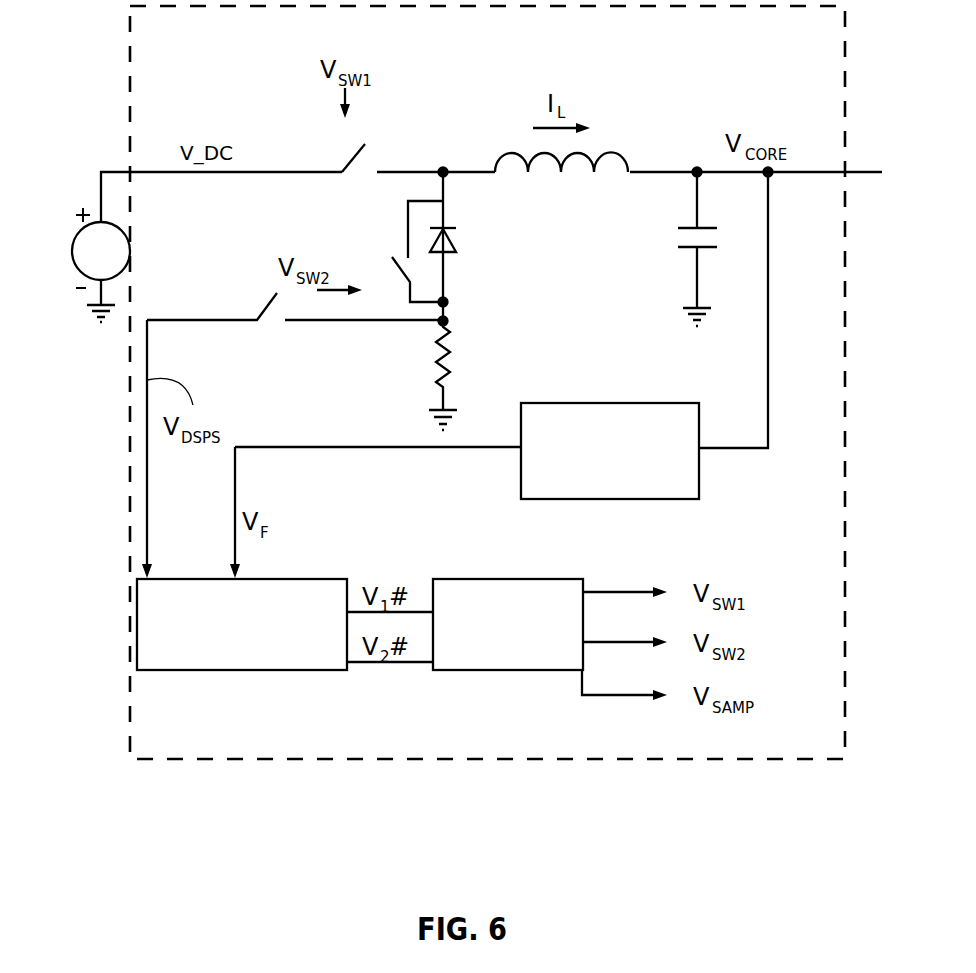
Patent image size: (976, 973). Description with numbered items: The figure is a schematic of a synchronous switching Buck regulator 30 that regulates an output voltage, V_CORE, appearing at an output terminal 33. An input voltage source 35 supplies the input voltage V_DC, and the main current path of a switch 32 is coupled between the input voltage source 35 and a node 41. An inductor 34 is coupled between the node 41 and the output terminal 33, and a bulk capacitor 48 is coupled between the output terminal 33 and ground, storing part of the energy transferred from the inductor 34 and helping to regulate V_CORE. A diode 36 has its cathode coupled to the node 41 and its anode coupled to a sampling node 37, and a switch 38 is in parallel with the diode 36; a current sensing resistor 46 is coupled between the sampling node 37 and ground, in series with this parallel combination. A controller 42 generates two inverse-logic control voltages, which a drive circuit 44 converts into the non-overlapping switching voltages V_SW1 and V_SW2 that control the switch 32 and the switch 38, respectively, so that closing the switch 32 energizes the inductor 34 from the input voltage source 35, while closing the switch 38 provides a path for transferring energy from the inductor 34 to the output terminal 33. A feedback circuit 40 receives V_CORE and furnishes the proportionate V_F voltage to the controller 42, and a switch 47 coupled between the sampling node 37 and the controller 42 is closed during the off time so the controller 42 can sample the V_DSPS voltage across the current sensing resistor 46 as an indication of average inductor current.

The synchronous switching Buck regulator 30 is at (700, 760).
The switch 32 is at (366, 150).
The output terminal 33 is at (778, 173).
The inductor 34 is at (613, 157).
The input voltage source 35 is at (62, 250).
The diode 36 is at (457, 235).
The sampling node 37 is at (448, 298).
The switch 38 is at (400, 262).
The feedback circuit 40 is at (657, 500).
The node 41 is at (443, 163).
The controller 42 is at (188, 670).
The drive circuit 44 is at (535, 577).
The current sensing resistor 46 is at (450, 343).
The switch 47 is at (257, 315).
The bulk capacitor 48 is at (682, 248).